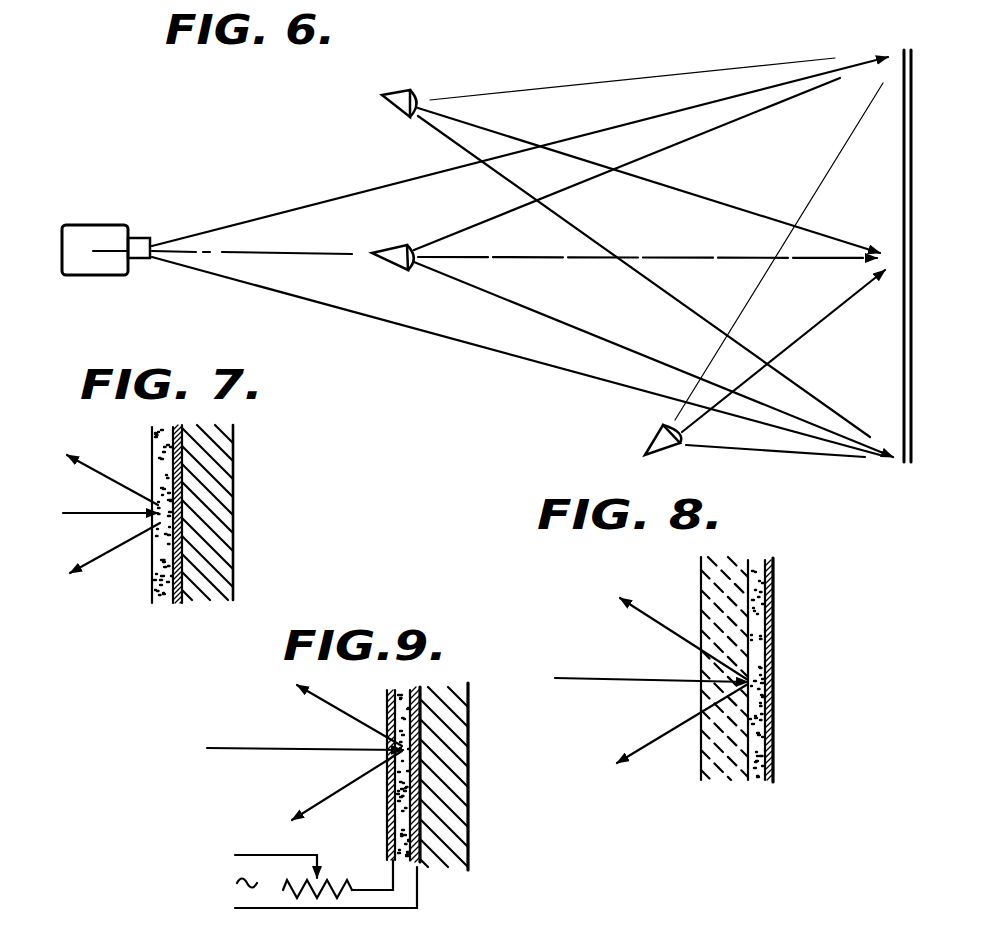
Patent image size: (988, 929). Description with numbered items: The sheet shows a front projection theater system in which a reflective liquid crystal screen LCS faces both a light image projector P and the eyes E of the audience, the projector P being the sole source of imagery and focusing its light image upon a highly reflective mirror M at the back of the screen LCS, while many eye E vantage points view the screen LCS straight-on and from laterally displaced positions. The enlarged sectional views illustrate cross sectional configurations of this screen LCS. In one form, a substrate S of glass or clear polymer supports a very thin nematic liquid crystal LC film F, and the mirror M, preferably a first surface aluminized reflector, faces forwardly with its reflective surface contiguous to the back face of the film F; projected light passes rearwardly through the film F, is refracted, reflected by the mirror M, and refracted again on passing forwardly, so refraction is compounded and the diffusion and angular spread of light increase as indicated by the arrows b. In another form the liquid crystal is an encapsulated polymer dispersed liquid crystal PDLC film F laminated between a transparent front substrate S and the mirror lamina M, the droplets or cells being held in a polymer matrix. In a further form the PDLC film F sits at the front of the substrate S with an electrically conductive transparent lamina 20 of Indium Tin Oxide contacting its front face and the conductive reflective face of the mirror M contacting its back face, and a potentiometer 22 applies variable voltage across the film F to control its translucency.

In FIG. 6, the projector P is at (100, 238).
In FIG. 6, the eyes E is at (410, 103).
In FIG. 6, the liquid crystal screen LCS is at (898, 152).
In FIG. 7, the liquid crystal screen LCS is at (181, 531).
In FIG. 8, the liquid crystal screen LCS is at (733, 654).
In FIG. 9, the liquid crystal screen LCS is at (389, 767).
In FIG. 6, the mirror M is at (905, 205).
In FIG. 7, the mirror M is at (178, 476).
In FIG. 8, the mirror M is at (773, 713).
In FIG. 9, the mirror M is at (418, 783).
In FIG. 7, the substrate S is at (215, 518).
In FIG. 8, the substrate S is at (702, 700).
In FIG. 9, the substrate S is at (445, 727).
In FIG. 7, the arrows b is at (108, 545).
In FIG. 8, the arrows b is at (650, 617).
In FIG. 9, the arrows b is at (328, 793).
In FIG. 7, the liquid crystal LC is at (158, 568).
In FIG. 7, the liquid crystal film F is at (160, 603).
In FIG. 8, the liquid crystal film F is at (757, 560).
In FIG. 8, the polymer dispersed liquid crystal PDLC is at (775, 600).
In FIG. 9, the polymer dispersed liquid crystal PDLC is at (399, 830).
In FIG. 9, the electrically conductive transparent lamina 20 is at (387, 700).
In FIG. 9, the potentiometer 22 is at (283, 878).